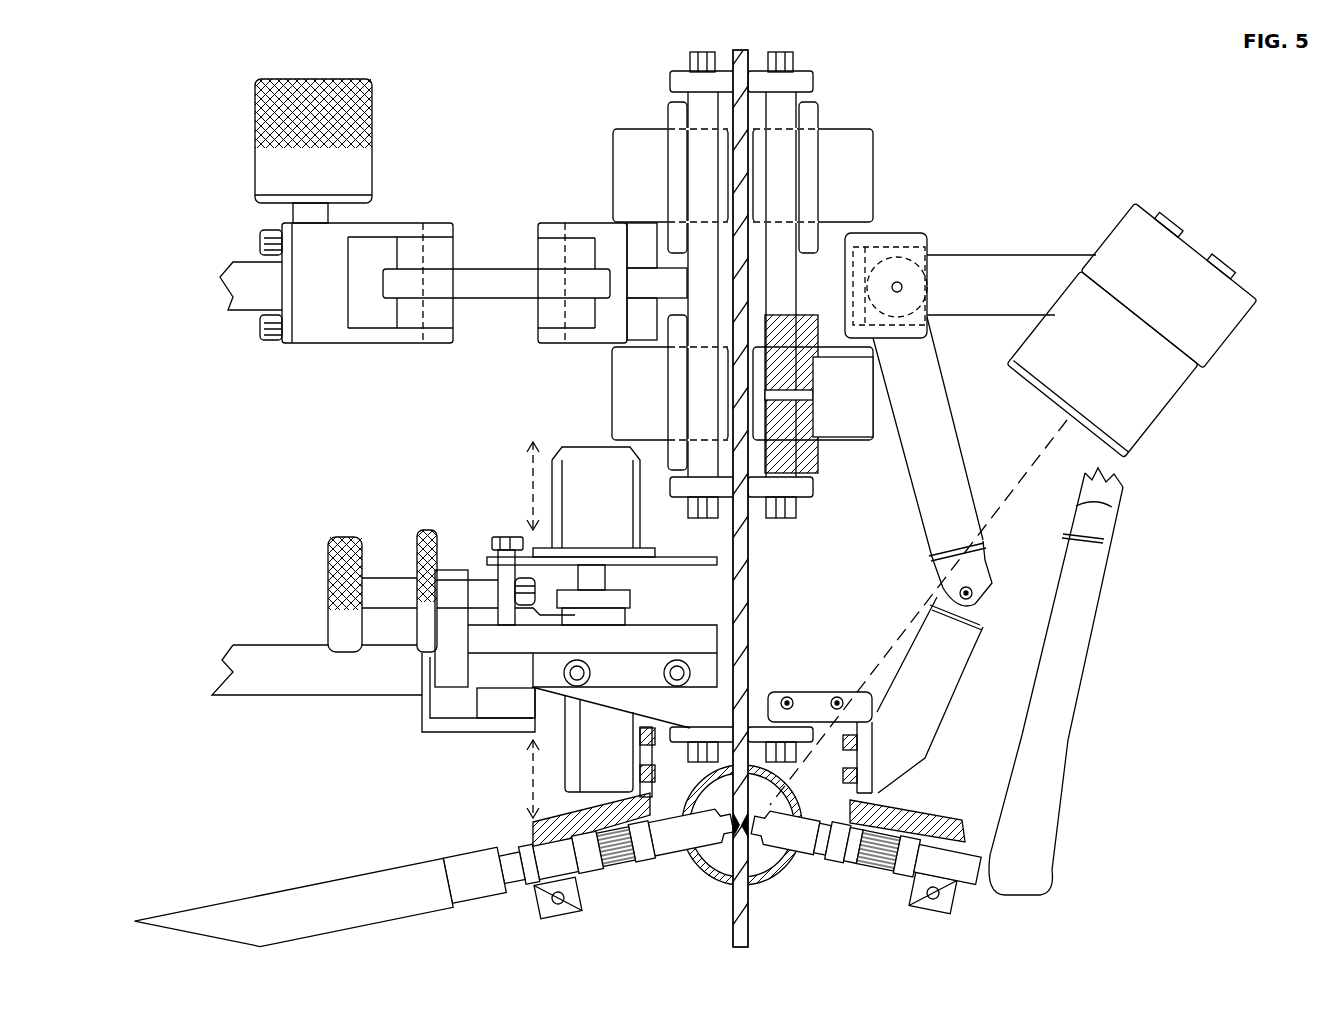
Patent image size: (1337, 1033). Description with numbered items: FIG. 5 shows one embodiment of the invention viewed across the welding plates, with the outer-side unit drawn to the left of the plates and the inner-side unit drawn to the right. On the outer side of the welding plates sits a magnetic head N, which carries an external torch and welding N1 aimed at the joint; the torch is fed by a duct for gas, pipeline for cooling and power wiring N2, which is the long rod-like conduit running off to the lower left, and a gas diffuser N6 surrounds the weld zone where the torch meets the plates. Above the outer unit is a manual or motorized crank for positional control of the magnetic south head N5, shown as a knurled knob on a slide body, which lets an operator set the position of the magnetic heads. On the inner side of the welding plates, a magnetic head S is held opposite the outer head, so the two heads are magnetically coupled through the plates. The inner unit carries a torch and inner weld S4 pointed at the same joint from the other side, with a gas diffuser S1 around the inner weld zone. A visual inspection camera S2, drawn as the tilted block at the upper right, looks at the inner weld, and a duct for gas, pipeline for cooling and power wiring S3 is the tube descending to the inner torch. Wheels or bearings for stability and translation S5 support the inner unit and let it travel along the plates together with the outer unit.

The magnetic head N is at (723, 395).
The magnetic head S is at (797, 318).
The external torch and welding N1 is at (678, 838).
The duct for gas, pipeline for cooling and power wiring N2 is at (185, 920).
The manual or motorized crank for positional control of the magnetic south head N5 is at (272, 167).
The gas diffuser N6 is at (708, 870).
The gas diffuser S1 is at (780, 867).
The visual inspection camera S2 is at (1118, 360).
The duct for gas, pipeline for cooling and power wiring S3 is at (1093, 517).
The torch and inner weld S4 is at (750, 837).
The wheels or bearings for stability and translation S5 is at (803, 488).